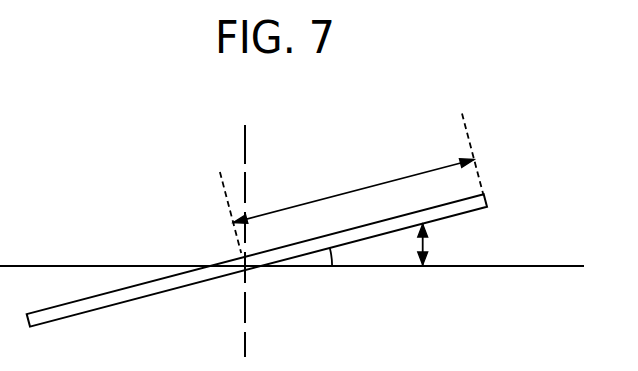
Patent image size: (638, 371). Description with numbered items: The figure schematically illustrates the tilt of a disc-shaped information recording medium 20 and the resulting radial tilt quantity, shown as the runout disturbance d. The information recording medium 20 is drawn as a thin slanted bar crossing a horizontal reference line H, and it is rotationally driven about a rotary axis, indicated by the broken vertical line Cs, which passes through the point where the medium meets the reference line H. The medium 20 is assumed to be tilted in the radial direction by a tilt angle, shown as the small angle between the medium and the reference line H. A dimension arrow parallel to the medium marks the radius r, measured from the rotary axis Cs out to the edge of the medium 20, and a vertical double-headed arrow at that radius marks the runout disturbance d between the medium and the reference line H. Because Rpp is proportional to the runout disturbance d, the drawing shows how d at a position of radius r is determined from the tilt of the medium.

The information recording medium 20 is at (485, 197).
The rotary axis Cs is at (243, 137).
The horizontal reference plane H is at (545, 267).
The radius r is at (352, 184).
The runout disturbance d is at (426, 243).